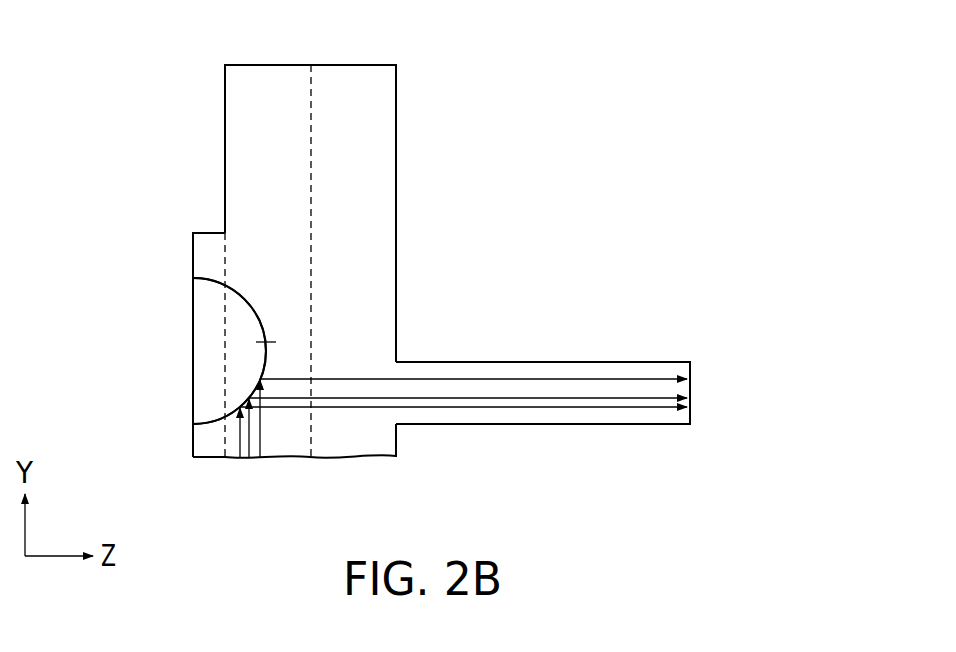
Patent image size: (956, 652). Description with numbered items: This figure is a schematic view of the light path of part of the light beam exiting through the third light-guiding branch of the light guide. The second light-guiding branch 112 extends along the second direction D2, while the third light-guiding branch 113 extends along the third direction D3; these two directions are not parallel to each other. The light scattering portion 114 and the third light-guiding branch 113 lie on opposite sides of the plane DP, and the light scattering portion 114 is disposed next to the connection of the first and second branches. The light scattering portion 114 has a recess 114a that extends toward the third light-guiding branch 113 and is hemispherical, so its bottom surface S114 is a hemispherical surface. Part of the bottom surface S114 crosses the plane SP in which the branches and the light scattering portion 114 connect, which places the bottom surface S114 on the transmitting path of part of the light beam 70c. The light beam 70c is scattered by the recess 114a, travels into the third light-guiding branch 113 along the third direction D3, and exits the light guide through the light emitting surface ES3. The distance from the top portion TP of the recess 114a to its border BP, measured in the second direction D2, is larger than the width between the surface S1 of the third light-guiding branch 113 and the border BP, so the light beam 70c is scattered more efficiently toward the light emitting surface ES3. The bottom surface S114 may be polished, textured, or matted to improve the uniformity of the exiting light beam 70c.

The second light-guiding branch 112 is at (371, 128).
The third light-guiding branch 113 is at (638, 372).
The light scattering portion 114 is at (194, 310).
The recess 114a is at (214, 353).
The light beam 70c is at (266, 457).
The plane SP is at (227, 258).
The plane DP is at (313, 258).
The top portion TP is at (275, 341).
The bottom surface S114 is at (266, 365).
The surface S1 is at (525, 360).
The border BP is at (192, 424).
The light emitting surface ES3 is at (691, 388).
The second direction D2 is at (365, 7).
The third direction D3 is at (754, 345).